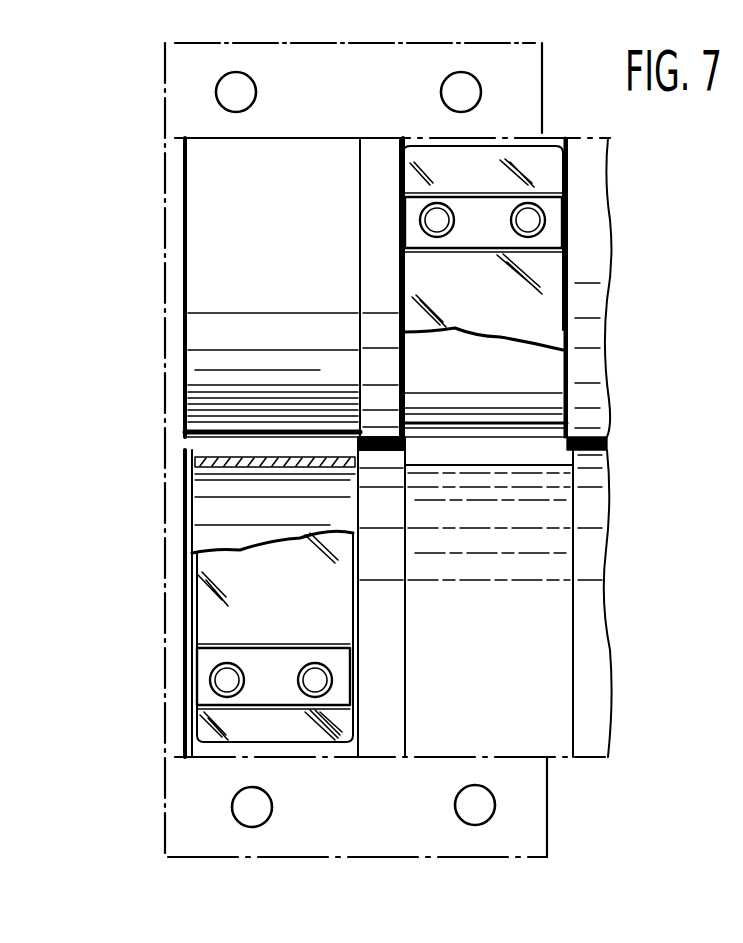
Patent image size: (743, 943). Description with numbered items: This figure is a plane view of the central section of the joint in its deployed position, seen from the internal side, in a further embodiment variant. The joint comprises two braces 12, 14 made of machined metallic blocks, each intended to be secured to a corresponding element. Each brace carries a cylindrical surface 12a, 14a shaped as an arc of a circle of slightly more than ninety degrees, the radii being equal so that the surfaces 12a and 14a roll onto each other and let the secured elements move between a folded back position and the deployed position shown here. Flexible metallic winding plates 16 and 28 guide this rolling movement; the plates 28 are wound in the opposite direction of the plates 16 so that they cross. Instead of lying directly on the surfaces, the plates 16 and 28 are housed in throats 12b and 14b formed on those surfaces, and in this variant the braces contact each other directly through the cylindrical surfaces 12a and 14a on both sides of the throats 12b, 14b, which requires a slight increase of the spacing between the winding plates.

The brace 12 is at (158, 198).
The brace 14 is at (160, 718).
The winding plate 16 is at (532, 278).
The cylindrical surface 12a is at (600, 405).
The throat 12b is at (213, 437).
The cylindrical surface 14a is at (590, 473).
The throat 14b is at (250, 480).
The winding plate 28 is at (222, 602).